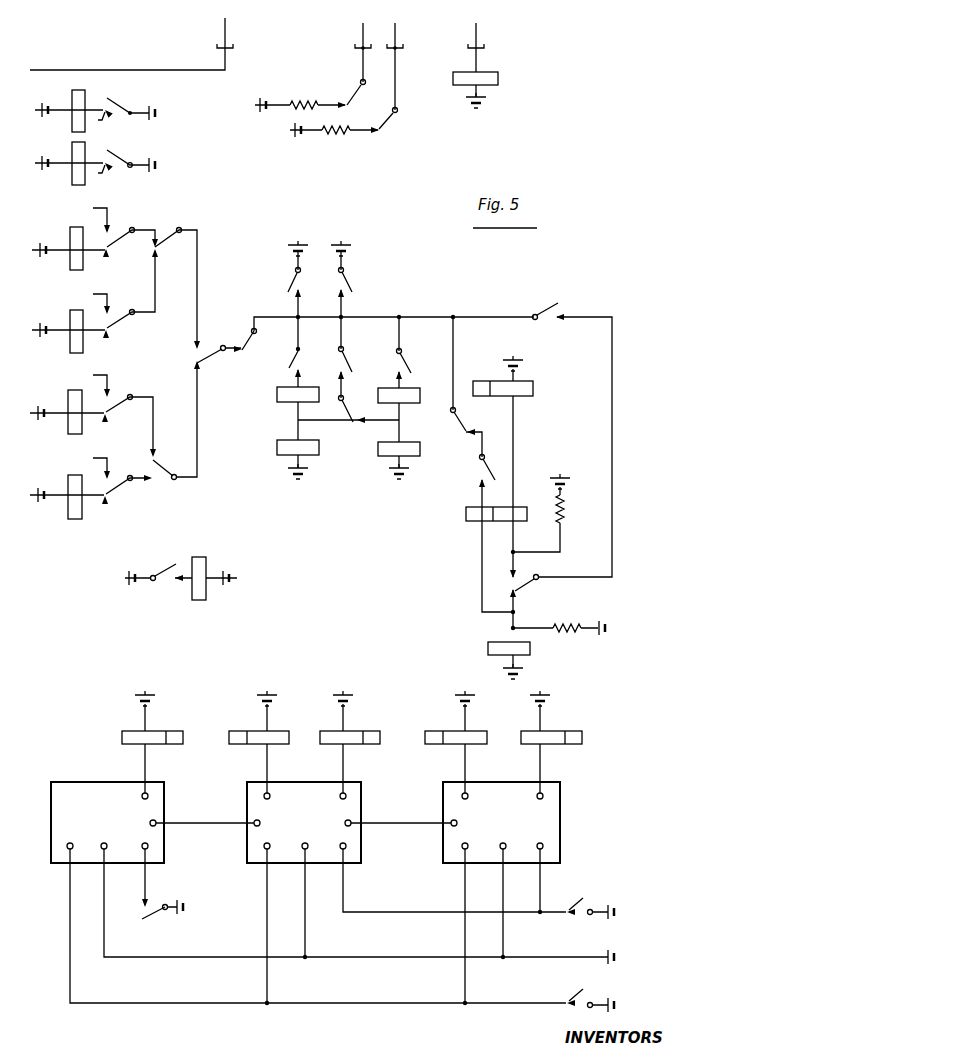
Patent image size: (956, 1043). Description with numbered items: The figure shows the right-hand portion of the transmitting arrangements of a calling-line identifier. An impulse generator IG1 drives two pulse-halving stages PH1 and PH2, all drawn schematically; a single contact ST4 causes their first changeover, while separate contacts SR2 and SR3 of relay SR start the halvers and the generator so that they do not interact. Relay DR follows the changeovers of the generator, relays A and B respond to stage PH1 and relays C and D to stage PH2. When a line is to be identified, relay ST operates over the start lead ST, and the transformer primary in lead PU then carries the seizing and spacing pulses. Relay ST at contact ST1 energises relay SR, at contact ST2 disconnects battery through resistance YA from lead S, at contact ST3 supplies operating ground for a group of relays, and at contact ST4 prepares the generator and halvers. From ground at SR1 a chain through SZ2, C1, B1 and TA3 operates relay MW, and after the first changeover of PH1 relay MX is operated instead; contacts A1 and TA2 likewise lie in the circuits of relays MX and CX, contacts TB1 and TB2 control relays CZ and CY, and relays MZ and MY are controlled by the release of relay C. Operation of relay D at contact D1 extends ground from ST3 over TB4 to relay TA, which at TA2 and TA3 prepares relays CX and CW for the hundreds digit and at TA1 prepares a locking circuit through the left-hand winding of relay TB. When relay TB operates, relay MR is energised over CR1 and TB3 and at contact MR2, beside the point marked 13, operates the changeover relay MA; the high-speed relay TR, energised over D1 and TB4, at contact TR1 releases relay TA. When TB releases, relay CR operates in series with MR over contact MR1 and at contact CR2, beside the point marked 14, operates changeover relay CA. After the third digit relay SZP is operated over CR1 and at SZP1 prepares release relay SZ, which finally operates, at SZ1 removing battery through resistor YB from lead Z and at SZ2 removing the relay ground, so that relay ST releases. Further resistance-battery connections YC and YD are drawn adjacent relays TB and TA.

The lead PU is at (143, 44).
The changeover relay MA is at (70, 91).
The contact MR2 of relay MR MR2 is at (129, 100).
The contact pivot 13 is at (102, 124).
The changeover relay CA is at (70, 143).
The contact CR2 of relay CR CR2 is at (129, 152).
The contact pivot 14 is at (102, 177).
The lead S is at (355, 54).
The lead Z is at (400, 68).
The relay ST is at (517, 83).
The resistance YA is at (300, 97).
The contact ST2 of relay ST ST2 is at (341, 93).
The resistor YB is at (334, 138).
The contact SZ1 of relay SZ SZ1 is at (400, 122).
The relay MX is at (68, 228).
The relay CX is at (91, 217).
The contact TA2 of relay TA TA2 is at (130, 246).
The contact B1 of relay B B1 is at (177, 289).
The relay MW is at (68, 308).
The relay CW is at (91, 301).
The contact TA3 of relay TA TA3 is at (130, 296).
The relay MZ is at (66, 388).
The relay CZ is at (91, 382).
The contact TB1 of relay TB TB1 is at (129, 426).
The contact A1 is at (175, 421).
The relay MY is at (66, 473).
The relay CY is at (91, 465).
The contact TB2 of relay TB TB2 is at (127, 492).
The contact C1 of relay C C1 is at (210, 362).
The contact SZ2 of relay SZ SZ2 is at (256, 334).
The contact SR1 of relay SR SR1 is at (283, 296).
The contact SZP1 of relay SZP SZP1 is at (275, 369).
The release relay SZ is at (268, 400).
The relay SZP is at (266, 456).
The contact ST3 of relay ST ST3 is at (354, 295).
The contact TB3 of relay TB TB3 is at (358, 373).
The contact CR1 of relay CR CR1 is at (348, 420).
The contact MR1 of relay MR MR1 is at (419, 351).
The relay CR is at (440, 396).
The relay MR is at (440, 450).
The contact D1 of relay D D1 is at (570, 434).
The contact TR1 of relay TR TR1 is at (471, 387).
The contact TA1 of relay TA TA1 is at (482, 534).
The high speed relay TR is at (556, 391).
The relay TB is at (462, 509).
The contact TB4 of relay TB TB4 is at (529, 603).
The resistor YC is at (549, 514).
The resistor YD is at (559, 636).
The relay TA is at (480, 645).
The relay SR is at (208, 536).
The contact ST1 of relay ST ST1 is at (154, 582).
The relay DR is at (126, 709).
The relay A is at (246, 711).
The relay B is at (376, 711).
The relay C is at (444, 711).
The relay D is at (571, 711).
The impulse generator IG1 is at (152, 822).
The pulse-halving stage PH1 is at (349, 822).
The pulse-halving stage PH2 is at (501, 822).
The contact SR3 of relay SR SR3 is at (162, 917).
The contact SR2 of relay SR SR2 is at (589, 917).
The contact ST4 of relay ST ST4 is at (588, 1008).